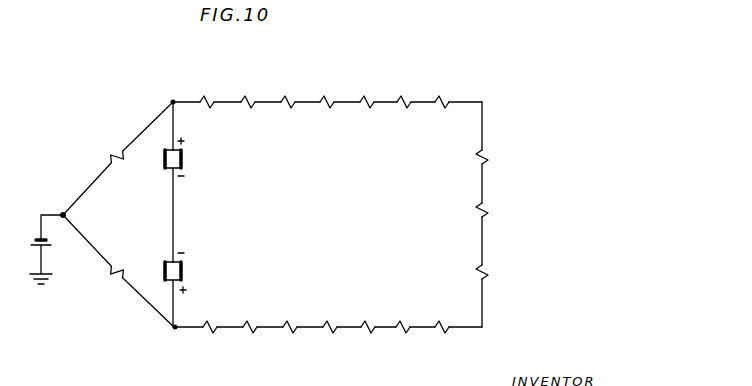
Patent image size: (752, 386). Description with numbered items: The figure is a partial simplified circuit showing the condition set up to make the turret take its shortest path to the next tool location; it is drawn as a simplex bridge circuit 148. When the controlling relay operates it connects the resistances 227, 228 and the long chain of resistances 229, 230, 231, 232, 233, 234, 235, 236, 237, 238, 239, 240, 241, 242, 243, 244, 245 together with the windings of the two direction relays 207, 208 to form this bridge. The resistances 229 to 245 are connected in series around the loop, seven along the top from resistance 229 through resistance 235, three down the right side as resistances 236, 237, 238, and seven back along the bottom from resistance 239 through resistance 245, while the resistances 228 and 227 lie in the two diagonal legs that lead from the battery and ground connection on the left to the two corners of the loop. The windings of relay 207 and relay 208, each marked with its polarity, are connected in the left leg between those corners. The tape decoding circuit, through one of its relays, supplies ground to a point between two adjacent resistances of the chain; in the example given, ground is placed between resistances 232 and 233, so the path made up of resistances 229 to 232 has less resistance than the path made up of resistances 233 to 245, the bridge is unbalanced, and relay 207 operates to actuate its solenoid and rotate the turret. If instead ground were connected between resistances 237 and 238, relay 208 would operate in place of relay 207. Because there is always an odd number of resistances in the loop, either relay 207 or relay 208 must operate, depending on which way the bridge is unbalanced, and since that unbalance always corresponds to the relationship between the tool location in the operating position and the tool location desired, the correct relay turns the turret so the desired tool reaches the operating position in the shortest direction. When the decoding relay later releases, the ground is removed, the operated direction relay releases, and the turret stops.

The simplex bridge circuit 148 is at (504, 85).
The relay 207 is at (184, 161).
The relay 208 is at (184, 272).
The resistance 227 is at (112, 288).
The resistance 228 is at (100, 161).
The resistance 229 is at (220, 88).
The resistance 230 is at (247, 99).
The resistance 231 is at (300, 88).
The resistance 232 is at (328, 99).
The resistance 233 is at (380, 88).
The resistance 234 is at (409, 99).
The resistance 235 is at (455, 88).
The resistance 236 is at (487, 158).
The resistance 237 is at (487, 211).
The resistance 238 is at (487, 273).
The resistance 239 is at (443, 333).
The resistance 240 is at (405, 333).
The resistance 241 is at (368, 333).
The resistance 242 is at (332, 333).
The resistance 243 is at (303, 352).
The resistance 244 is at (251, 333).
The resistance 245 is at (213, 333).